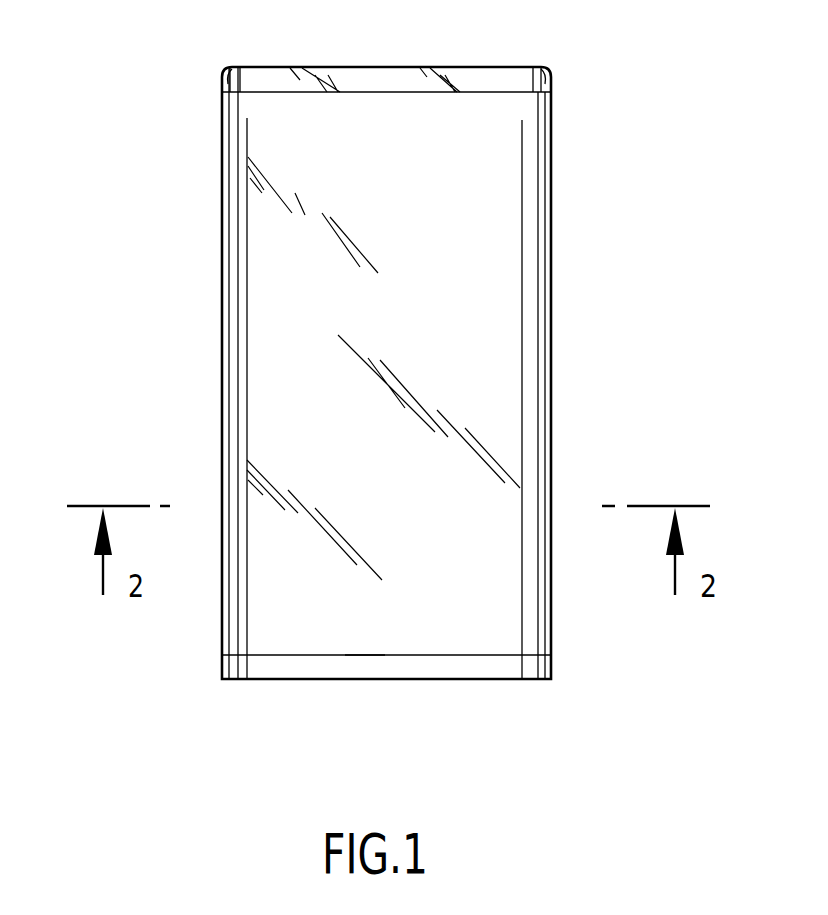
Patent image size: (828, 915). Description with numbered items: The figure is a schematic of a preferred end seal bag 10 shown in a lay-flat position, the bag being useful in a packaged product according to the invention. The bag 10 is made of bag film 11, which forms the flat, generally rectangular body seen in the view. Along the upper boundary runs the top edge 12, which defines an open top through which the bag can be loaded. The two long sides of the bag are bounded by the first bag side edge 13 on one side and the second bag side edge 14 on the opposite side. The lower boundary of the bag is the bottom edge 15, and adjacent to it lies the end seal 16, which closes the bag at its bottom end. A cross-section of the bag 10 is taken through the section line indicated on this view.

The package 10 is at (150, 238).
The front panel 11 is at (505, 152).
The top edge 12 is at (465, 70).
The left side edge 13 is at (225, 380).
The right side edge 14 is at (548, 245).
The bottom edge 15 is at (498, 682).
The bottom seal 16 is at (353, 656).